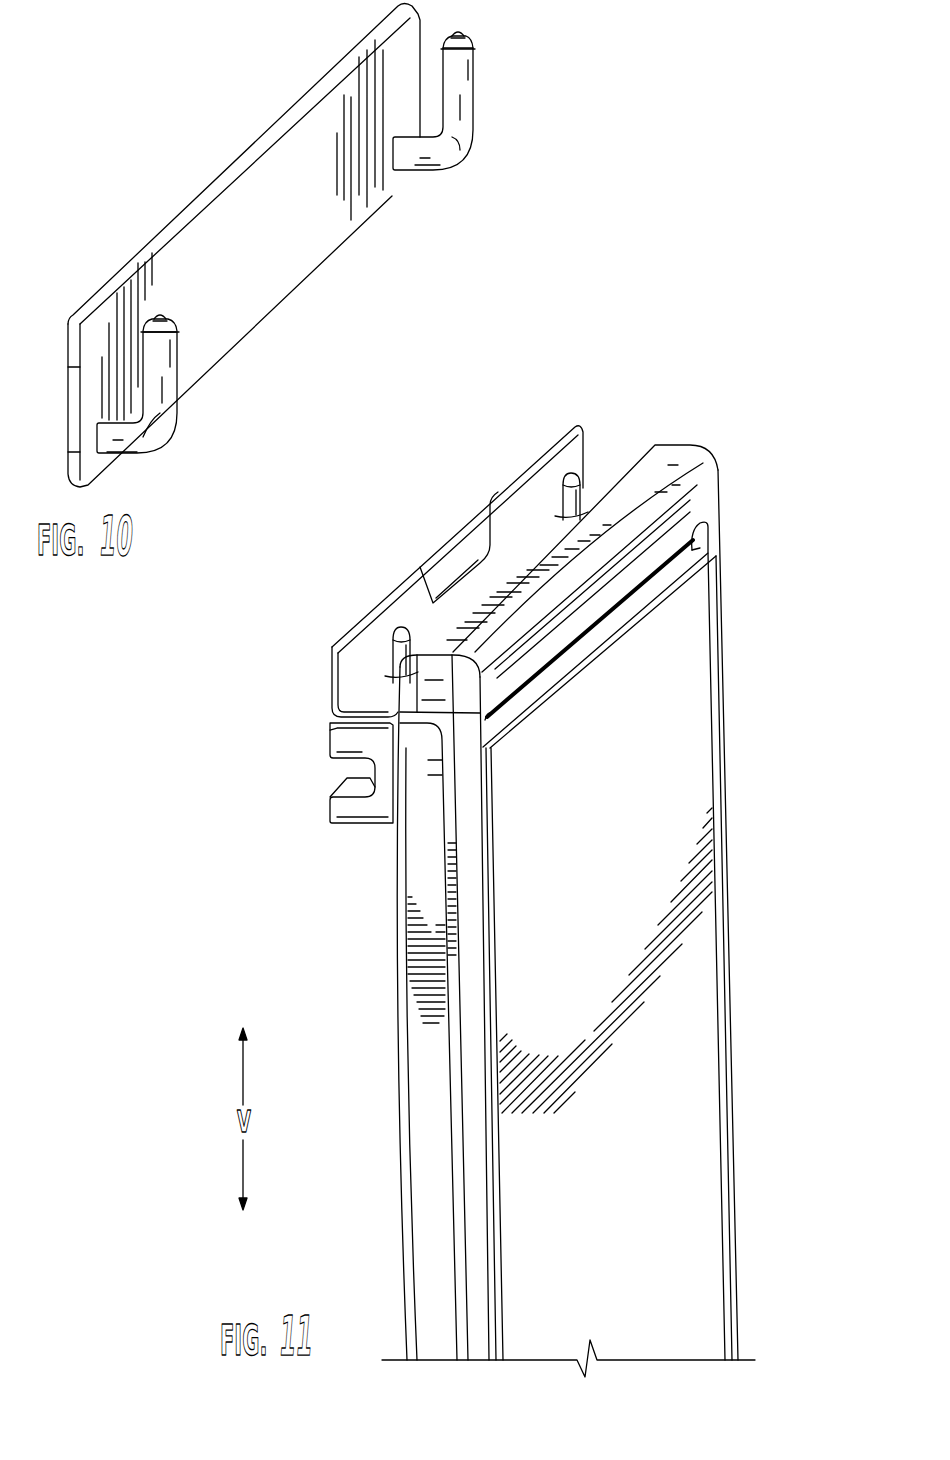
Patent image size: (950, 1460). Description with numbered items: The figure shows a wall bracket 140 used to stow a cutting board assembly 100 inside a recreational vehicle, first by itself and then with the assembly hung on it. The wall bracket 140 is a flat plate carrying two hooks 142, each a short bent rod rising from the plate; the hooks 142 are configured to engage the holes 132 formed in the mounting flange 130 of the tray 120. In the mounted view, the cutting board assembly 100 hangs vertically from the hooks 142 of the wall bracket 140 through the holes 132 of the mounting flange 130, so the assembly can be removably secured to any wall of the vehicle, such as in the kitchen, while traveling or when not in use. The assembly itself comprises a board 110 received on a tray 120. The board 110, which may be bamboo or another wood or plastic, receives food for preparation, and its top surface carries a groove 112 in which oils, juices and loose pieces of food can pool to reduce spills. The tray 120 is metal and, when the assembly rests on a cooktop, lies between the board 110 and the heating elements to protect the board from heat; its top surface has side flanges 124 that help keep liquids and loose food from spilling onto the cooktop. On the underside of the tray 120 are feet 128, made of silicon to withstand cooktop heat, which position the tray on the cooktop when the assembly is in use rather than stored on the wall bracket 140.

In FIG. 11, the cutting board assembly 100 is at (648, 367).
In FIG. 11, the board 110 is at (698, 463).
In FIG. 11, the groove 112 is at (707, 543).
In FIG. 11, the tray 120 is at (390, 1027).
In FIG. 11, the side flanges 124 is at (423, 917).
In FIG. 11, the feet 128 is at (328, 810).
In FIG. 11, the mounting flange 130 is at (380, 702).
In FIG. 11, the holes 132 is at (553, 513).
In FIG. 10, the wall bracket 140 is at (203, 227).
In FIG. 11, the wall bracket 140 is at (453, 558).
In FIG. 10, the hooks 142 is at (463, 100).
In FIG. 11, the hooks 142 is at (563, 490).